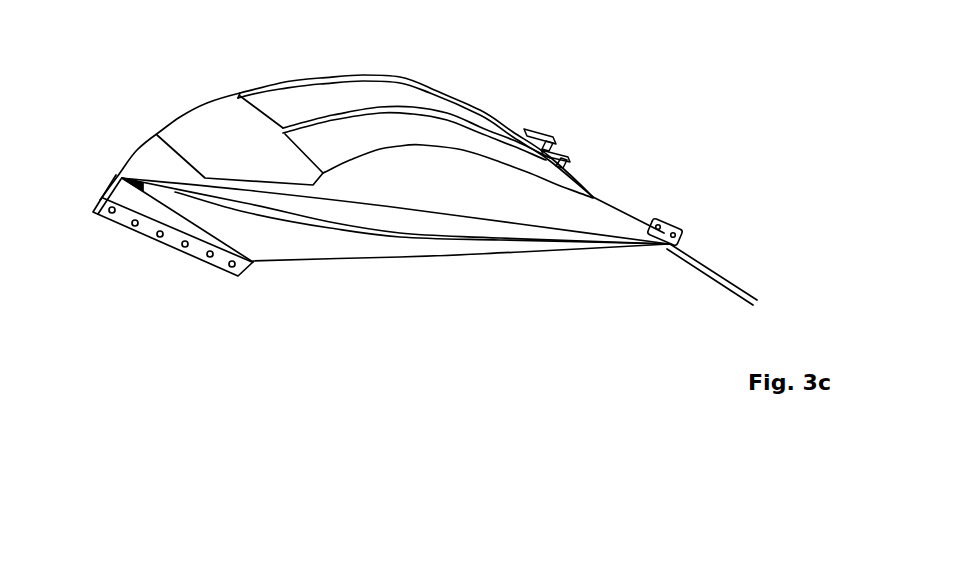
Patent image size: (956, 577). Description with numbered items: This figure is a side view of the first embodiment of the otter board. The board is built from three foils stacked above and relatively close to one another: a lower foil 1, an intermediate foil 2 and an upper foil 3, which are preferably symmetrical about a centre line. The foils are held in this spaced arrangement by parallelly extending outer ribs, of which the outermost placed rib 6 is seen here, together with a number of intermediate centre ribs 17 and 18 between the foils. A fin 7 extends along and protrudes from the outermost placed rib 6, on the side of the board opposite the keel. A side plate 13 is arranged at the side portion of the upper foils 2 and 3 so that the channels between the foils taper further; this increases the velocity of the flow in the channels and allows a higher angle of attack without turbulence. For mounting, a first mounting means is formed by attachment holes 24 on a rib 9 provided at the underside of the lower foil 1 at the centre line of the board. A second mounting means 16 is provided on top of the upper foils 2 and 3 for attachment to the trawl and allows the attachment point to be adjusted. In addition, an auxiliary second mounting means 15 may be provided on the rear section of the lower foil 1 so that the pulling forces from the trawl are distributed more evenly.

The lower foil 1 is at (687, 263).
The intermediate foil 2 is at (353, 110).
The upper foil 3 is at (281, 84).
The outer rib 6 is at (345, 248).
The fin 7 is at (387, 218).
The rib 9 is at (196, 249).
The side plate 13 is at (238, 145).
The auxiliary second mounting means 15 is at (672, 218).
The second mounting means 16 is at (538, 130).
The intermediate centre rib 17 is at (465, 148).
The intermediate centre rib 18 is at (393, 75).
The attachment holes 24 is at (133, 227).